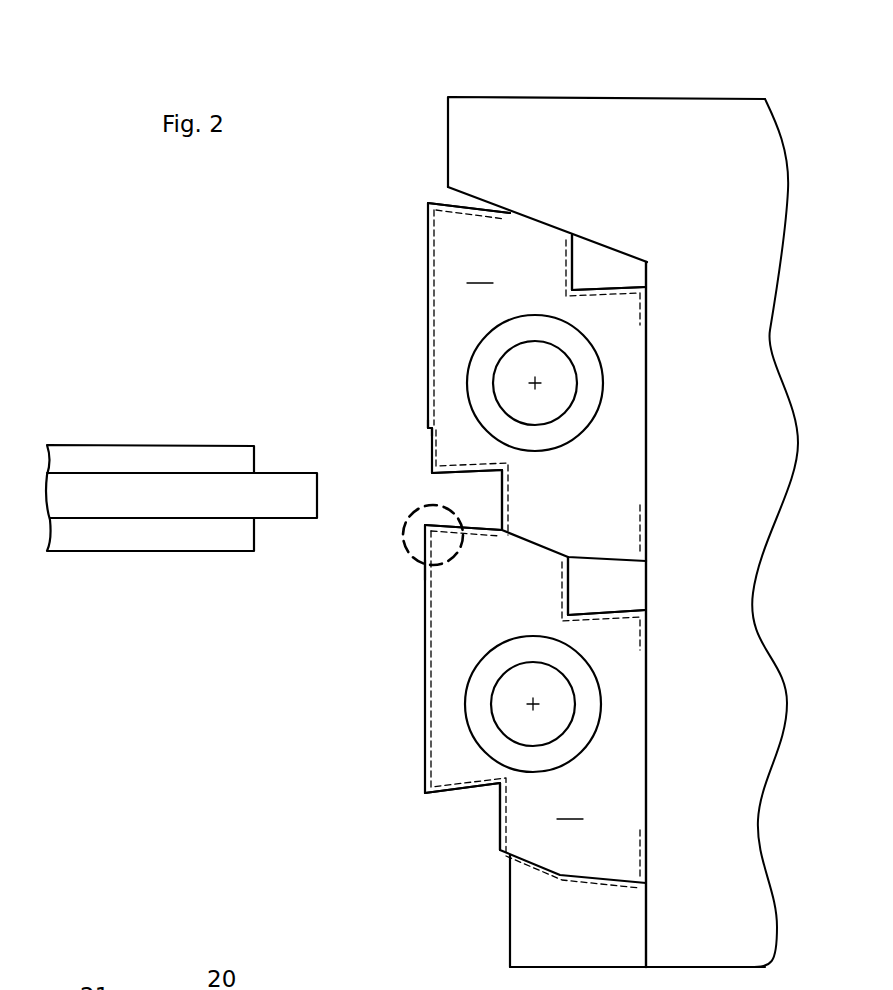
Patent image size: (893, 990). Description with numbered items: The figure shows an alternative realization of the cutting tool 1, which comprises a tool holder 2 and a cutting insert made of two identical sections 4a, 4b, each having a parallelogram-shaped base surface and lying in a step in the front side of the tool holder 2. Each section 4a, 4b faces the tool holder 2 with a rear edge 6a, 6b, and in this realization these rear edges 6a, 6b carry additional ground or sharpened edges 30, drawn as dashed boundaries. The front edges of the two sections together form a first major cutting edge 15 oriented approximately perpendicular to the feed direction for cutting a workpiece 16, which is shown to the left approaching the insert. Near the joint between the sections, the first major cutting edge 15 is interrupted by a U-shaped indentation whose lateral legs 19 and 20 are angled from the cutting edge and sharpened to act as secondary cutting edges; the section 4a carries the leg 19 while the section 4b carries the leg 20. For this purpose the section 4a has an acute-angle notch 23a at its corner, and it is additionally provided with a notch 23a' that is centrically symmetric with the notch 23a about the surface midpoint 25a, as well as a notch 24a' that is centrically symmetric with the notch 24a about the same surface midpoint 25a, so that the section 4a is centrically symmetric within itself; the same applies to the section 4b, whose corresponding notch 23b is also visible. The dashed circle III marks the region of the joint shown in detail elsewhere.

The cutting tool 1 is at (578, 90).
The tool holder 2 is at (732, 480).
The section 4a is at (537, 382).
The section 4b is at (535, 704).
The rear edge 6a is at (652, 400).
The rear edge 6b is at (652, 766).
The first major cutting edge 15 is at (420, 433).
The workpiece 16 is at (65, 444).
The lateral leg 19 is at (462, 476).
The lateral leg 20 is at (482, 533).
The notch 23a is at (534, 500).
The notch 23a' is at (627, 245).
The projection of lower jaw 23b is at (452, 802).
The upper jaw top face 24a is at (432, 179).
The notch 24a' is at (652, 586).
The surface midpoint 25a is at (535, 383).
The ground or sharpened edges 30 is at (646, 322).
The detail circle III is at (402, 535).